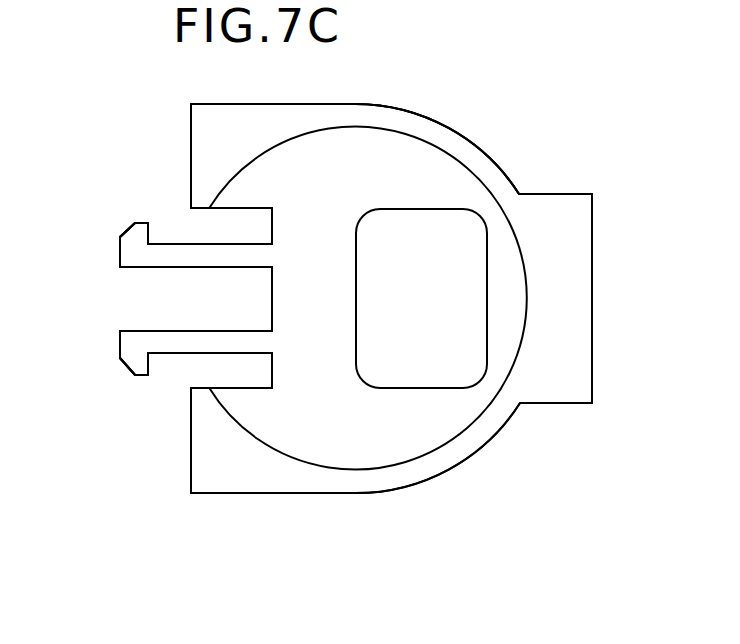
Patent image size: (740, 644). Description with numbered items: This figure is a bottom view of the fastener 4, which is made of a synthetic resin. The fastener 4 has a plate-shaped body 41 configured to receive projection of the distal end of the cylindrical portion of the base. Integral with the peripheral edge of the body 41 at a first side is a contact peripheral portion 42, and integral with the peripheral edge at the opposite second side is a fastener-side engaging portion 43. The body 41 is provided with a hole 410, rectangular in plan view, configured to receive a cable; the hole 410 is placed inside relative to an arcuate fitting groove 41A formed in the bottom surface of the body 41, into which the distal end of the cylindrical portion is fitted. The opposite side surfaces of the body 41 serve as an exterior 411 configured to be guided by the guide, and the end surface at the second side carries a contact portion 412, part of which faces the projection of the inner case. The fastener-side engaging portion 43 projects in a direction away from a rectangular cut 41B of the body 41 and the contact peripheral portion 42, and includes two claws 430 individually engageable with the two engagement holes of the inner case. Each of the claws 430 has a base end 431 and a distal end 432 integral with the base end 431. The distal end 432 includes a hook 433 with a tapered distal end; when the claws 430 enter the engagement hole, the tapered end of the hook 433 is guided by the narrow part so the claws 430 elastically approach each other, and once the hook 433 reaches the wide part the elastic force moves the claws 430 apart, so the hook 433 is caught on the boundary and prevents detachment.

The fastener 4 is at (488, 110).
The body 41 is at (372, 482).
The fitting groove 41A is at (418, 148).
The rectangular cut 41B is at (272, 308).
The hole 410 is at (403, 209).
The exterior 411 is at (243, 102).
The contact portion 412 is at (189, 148).
The contact peripheral portion 42 is at (545, 212).
The fastener-side engaging portion 43 is at (100, 265).
The claws 430 is at (48, 177).
The base end 431 is at (183, 244).
The distal end 432 is at (119, 252).
The hook 433 is at (143, 232).